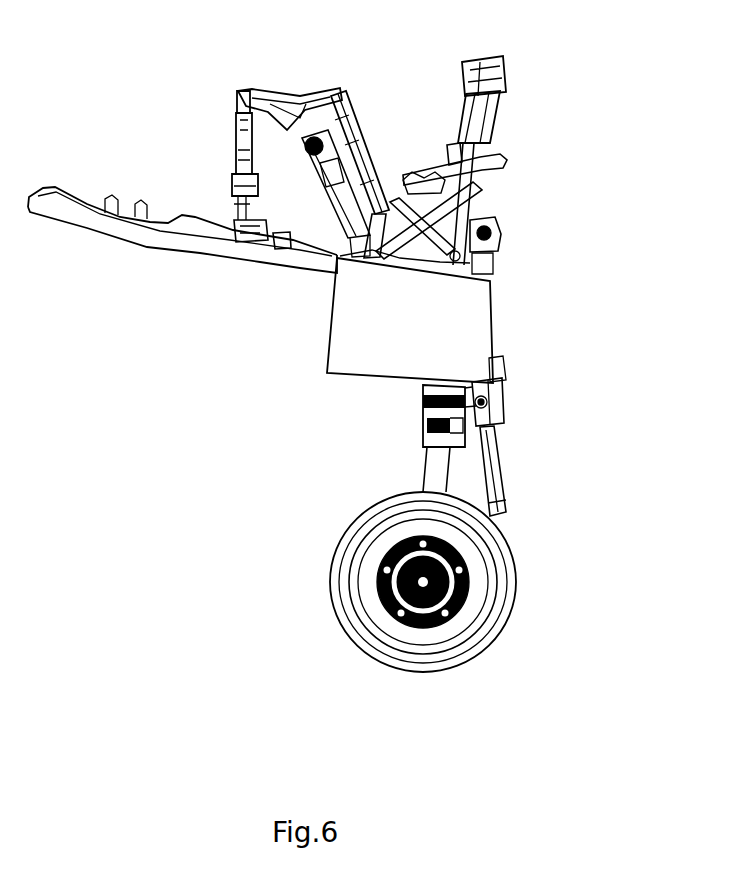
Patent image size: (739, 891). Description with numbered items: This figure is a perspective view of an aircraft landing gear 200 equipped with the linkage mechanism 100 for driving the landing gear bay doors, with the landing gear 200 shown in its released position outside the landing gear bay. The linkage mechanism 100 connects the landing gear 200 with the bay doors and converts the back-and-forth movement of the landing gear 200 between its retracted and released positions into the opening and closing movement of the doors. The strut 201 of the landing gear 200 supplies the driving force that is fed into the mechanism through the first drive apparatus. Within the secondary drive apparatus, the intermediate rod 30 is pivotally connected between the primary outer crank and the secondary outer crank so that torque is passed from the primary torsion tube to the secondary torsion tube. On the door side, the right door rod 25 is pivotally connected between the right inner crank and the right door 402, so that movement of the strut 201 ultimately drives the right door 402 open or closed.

The linkage mechanism 100 is at (262, 63).
The right door rod 25 is at (233, 140).
The intermediate rod 30 is at (372, 150).
The right door 402 is at (197, 237).
The landing gear 200 is at (548, 472).
The strut 201 is at (417, 423).